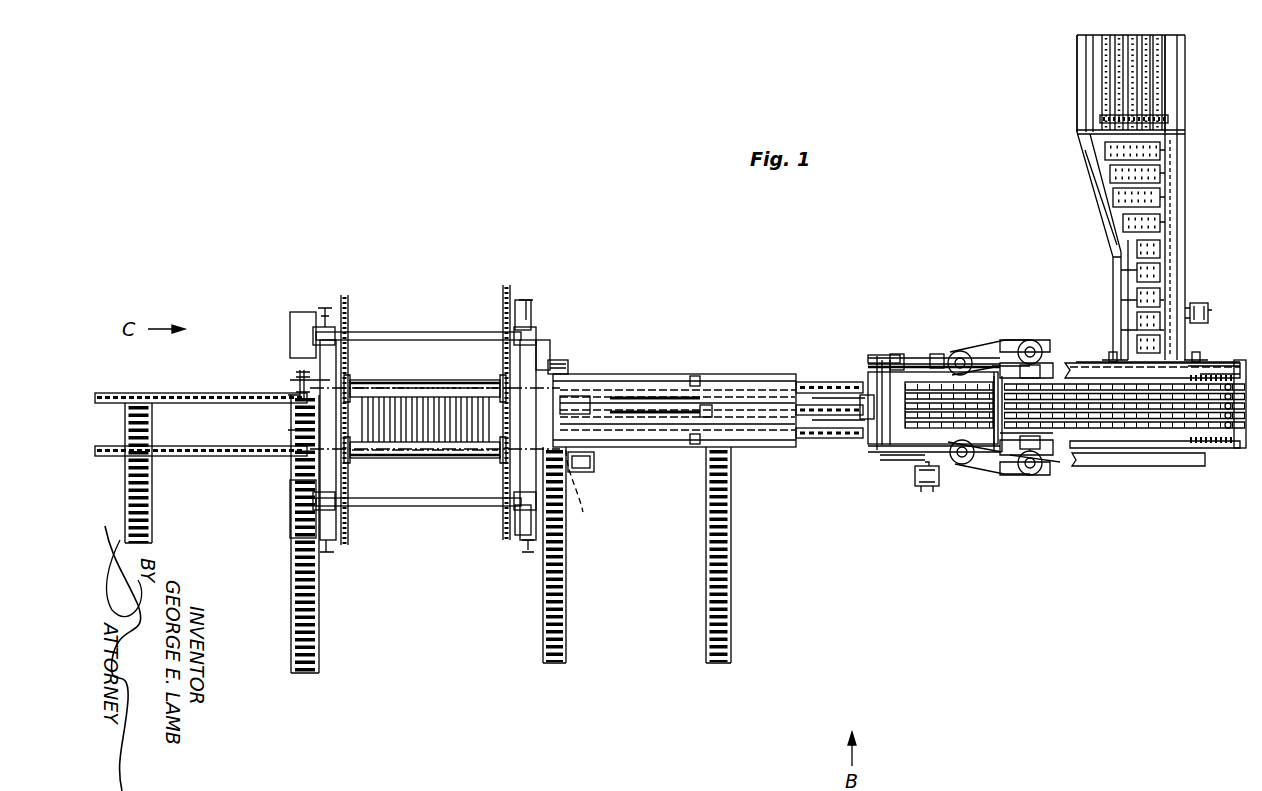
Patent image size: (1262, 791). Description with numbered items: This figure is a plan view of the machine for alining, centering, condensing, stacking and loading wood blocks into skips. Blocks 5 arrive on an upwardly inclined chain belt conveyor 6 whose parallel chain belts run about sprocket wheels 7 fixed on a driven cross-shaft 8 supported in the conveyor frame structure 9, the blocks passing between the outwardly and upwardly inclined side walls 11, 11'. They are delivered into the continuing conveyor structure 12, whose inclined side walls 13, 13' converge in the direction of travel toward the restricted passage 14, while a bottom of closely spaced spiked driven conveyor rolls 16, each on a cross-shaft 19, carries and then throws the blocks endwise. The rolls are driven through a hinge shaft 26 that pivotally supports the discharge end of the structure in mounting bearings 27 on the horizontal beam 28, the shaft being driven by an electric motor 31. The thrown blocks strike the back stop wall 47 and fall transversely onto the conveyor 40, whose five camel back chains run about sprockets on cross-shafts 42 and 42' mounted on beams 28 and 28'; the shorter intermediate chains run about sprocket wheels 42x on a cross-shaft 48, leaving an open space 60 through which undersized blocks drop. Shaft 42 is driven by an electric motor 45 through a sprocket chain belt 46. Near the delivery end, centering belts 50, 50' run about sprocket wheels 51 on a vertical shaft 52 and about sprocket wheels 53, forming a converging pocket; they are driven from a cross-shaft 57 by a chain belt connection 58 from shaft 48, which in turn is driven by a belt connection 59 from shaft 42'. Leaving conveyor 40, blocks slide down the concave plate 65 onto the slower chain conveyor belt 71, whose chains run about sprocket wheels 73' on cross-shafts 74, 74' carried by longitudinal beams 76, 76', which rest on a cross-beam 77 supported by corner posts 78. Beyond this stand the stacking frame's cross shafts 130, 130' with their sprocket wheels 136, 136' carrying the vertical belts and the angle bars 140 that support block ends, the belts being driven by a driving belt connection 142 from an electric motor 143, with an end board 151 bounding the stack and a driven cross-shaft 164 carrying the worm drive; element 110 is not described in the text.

The blocks 5 is at (410, 445).
The chain belt conveyor 6 is at (1100, 88).
The sprocket wheels 7 is at (1094, 135).
The driven cross-shaft 8 is at (1170, 116).
The conveyor frame structure 9 is at (1077, 100).
The side wall 11 is at (1045, 83).
The side wall 11' is at (1206, 83).
The conveyor structure 12 is at (1098, 240).
The side wall 13 is at (1105, 247).
The side wall 13' is at (1196, 185).
The restricted passage 14 is at (1132, 280).
The driven conveyor rolls 16 is at (1150, 210).
The cross-shaft 19 is at (1098, 162).
The hinge shaft 26 is at (1208, 355).
The mounting bearing 27 is at (1112, 352).
The horizontal beam 28 is at (1148, 352).
The horizontal beam 28' is at (1138, 475).
The electric motor 31 is at (1230, 280).
The conveyor 40 is at (1112, 420).
The cross-shaft 42 is at (1218, 417).
The cross-shaft 42' is at (917, 423).
The sprocket wheels 42x is at (915, 364).
The electric motor 45 is at (927, 486).
The sprocket chain belt 46 is at (900, 460).
The back stop wall 47 is at (1145, 470).
The cross-shaft 48 is at (937, 354).
The centering belt 50 is at (999, 436).
The centering belt 50' is at (1004, 315).
The sprocket wheels 51 is at (1036, 342).
The vertical shaft 52 is at (1022, 342).
The sprocket wheels 53 is at (964, 351).
The cross-shaft 57 is at (1040, 465).
The chain belt connection 58 is at (1003, 340).
The belt connection 59 is at (898, 354).
The open space 60 is at (933, 402).
The concave plate 65 is at (840, 415).
The chain conveyor belt 71 is at (830, 437).
The sprocket wheels 73' is at (580, 344).
The cross-shaft 74 is at (856, 446).
The cross-shaft 74' is at (593, 374).
The longitudinal beam 76 is at (674, 430).
The longitudinal beam 76' is at (675, 349).
The cross-beam 77 is at (550, 345).
The corner posts 78 is at (532, 300).
The conveyor 110 is at (240, 470).
The cross shaft 130 is at (418, 317).
The cross shaft 130' is at (418, 522).
The sprocket wheels 136 is at (425, 407).
The sprocket wheels 136' is at (375, 556).
The angle bars 140 is at (438, 380).
The driving belt connection 142 is at (595, 493).
The electric motor 143 is at (586, 472).
The end board 151 is at (300, 421).
The driven cross-shaft 164 is at (290, 382).